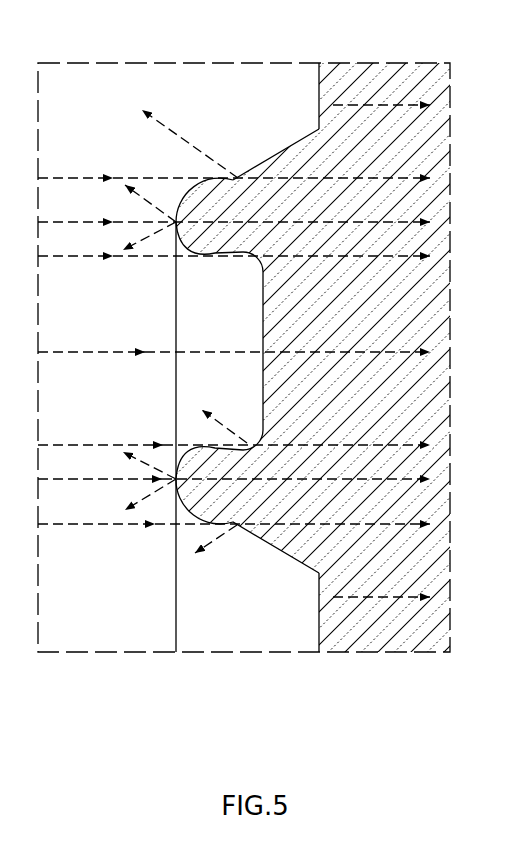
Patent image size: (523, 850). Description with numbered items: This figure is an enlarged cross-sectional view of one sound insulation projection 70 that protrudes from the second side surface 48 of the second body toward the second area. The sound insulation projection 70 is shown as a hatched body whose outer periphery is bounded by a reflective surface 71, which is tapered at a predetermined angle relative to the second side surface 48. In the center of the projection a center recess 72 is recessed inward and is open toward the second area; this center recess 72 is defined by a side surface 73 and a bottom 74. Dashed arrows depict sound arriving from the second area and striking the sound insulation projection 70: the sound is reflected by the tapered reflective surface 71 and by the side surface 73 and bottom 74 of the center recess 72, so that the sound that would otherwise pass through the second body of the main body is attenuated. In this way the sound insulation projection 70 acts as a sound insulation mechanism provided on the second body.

The second side surface 48 is at (318, 97).
The sound insulation projection 70 is at (219, 145).
The reflective surface 71 is at (266, 161).
The center recess 72 is at (204, 333).
The side surface 73 is at (220, 254).
The bottom 74 is at (262, 385).